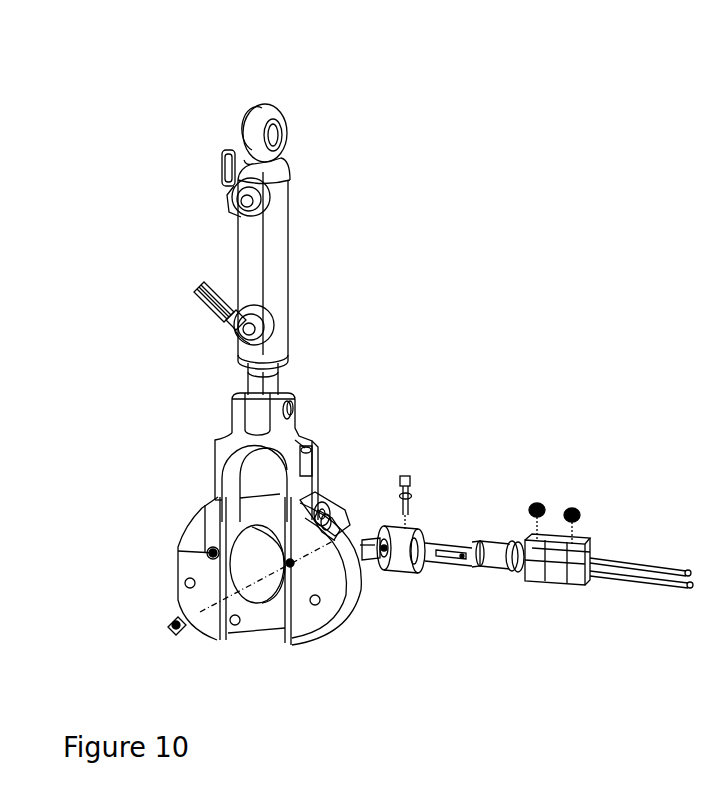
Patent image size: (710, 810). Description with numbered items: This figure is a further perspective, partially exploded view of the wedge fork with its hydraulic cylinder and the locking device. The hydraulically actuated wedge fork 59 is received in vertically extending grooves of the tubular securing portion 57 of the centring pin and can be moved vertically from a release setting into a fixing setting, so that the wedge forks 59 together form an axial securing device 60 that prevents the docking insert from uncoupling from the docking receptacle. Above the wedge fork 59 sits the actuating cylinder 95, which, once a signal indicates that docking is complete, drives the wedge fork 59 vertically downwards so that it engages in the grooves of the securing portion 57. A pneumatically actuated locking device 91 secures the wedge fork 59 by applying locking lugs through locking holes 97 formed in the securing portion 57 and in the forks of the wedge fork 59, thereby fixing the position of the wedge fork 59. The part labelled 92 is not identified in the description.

The axial securing device 60 is at (336, 284).
The actuating cylinder 95 is at (280, 212).
The wedge fork 59 is at (222, 450).
The locking hole 97 is at (313, 440).
The tubular securing portion 57 is at (318, 505).
The mounting housing 92 is at (286, 648).
The pneumatically actuated locking device 91 is at (550, 498).